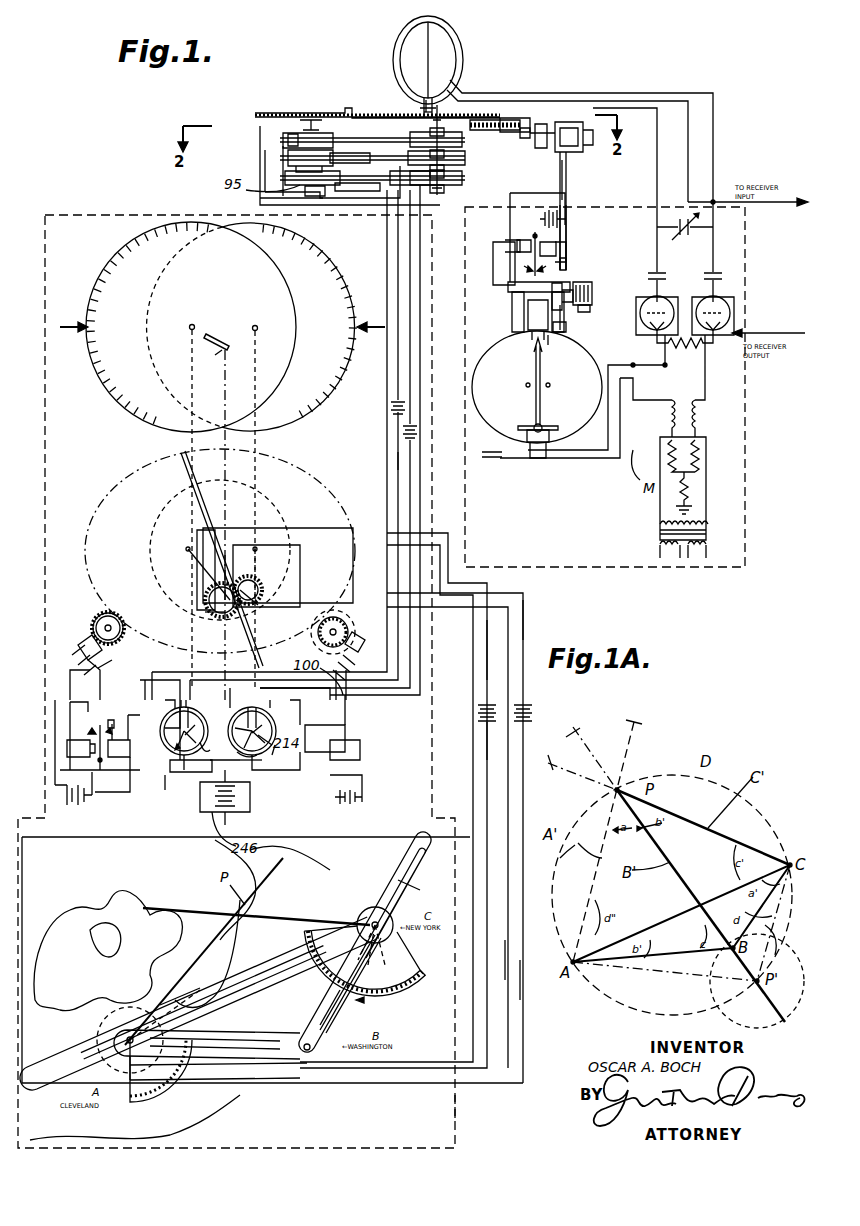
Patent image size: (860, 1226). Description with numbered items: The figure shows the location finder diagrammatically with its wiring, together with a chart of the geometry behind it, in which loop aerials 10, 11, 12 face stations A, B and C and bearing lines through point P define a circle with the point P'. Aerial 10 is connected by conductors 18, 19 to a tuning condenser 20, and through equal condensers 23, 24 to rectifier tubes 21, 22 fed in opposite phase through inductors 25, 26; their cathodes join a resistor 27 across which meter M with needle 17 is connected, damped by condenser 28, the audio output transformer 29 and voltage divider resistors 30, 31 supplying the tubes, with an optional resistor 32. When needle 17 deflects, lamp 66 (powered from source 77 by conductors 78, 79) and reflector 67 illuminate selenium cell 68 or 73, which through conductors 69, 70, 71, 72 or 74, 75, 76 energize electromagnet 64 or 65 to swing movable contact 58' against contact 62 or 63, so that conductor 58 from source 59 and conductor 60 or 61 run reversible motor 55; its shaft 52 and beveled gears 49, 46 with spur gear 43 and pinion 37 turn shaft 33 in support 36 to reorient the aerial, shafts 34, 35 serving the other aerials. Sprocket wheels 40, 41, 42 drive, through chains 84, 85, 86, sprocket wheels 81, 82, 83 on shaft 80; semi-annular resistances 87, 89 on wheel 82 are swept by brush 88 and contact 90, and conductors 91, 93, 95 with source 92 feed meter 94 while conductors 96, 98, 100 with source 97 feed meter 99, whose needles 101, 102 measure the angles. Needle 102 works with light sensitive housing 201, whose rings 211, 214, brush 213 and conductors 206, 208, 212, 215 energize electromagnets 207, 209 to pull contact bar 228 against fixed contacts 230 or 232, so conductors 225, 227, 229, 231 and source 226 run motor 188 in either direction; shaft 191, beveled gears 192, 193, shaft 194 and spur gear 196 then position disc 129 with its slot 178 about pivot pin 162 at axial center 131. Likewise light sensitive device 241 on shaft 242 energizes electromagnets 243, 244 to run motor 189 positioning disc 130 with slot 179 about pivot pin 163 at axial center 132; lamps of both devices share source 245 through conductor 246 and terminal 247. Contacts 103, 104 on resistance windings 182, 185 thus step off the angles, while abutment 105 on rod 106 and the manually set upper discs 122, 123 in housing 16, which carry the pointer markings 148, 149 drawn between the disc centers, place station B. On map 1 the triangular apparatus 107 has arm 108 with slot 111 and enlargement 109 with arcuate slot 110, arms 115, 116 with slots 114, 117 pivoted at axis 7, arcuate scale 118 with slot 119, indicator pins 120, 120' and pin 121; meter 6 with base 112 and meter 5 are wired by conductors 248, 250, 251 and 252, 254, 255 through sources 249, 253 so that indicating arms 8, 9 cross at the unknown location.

In FIG. 1, the map 1 is at (455, 1106).
In FIG. 1, the meter 5 is at (110, 1020).
In FIG. 1A, the meter 5 is at (752, 1025).
In FIG. 1, the meter 6 is at (362, 912).
In FIG. 1, the axis 7 is at (306, 1052).
In FIG. 1, the indicating arm 8 is at (188, 958).
In FIG. 1, the indicating arm 9 is at (180, 912).
In FIG. 1, the loop aerial 10 is at (405, 42).
In FIG. 1A, the loop aerial 10 is at (636, 722).
In FIG. 1, the loop aerial 11 is at (426, 34).
In FIG. 1A, the loop aerial 11 is at (572, 733).
In FIG. 1A, the loop aerial 12 is at (553, 762).
In FIG. 1, the housing 16 is at (70, 215).
In FIG. 1, the needle 17 is at (535, 398).
In FIG. 1, the conductor 18 is at (657, 150).
In FIG. 1, the conductor 19 is at (716, 126).
In FIG. 1, the condenser 20 is at (695, 232).
In FIG. 1, the rectifier tube 21 is at (664, 298).
In FIG. 1, the rectifier tube 22 is at (730, 300).
In FIG. 1, the condenser 23 is at (660, 270).
In FIG. 1, the condenser 24 is at (712, 272).
In FIG. 1, the radio frequency inductor 25 is at (668, 415).
In FIG. 1, the radio frequency inductor 26 is at (702, 415).
In FIG. 1, the resistor 27 is at (678, 342).
In FIG. 1, the condenser 28 is at (488, 460).
In FIG. 1, the audio output transformer 29 is at (660, 530).
In FIG. 1, the resistor 30 is at (668, 468).
In FIG. 1, the resistor 31 is at (700, 460).
In FIG. 1, the resistor 32 is at (690, 492).
In FIG. 1, the shaft 33 is at (424, 100).
In FIG. 1, the shaft 34 is at (455, 155).
In FIG. 1, the shaft 35 is at (458, 180).
In FIG. 1, the support 36 is at (262, 116).
In FIG. 1, the pinion 37 is at (428, 115).
In FIG. 1, the sprocket wheel 40 is at (460, 140).
In FIG. 1, the sprocket wheel 41 is at (458, 165).
In FIG. 1, the sprocket wheel 42 is at (445, 188).
In FIG. 1, the spur gear 43 is at (515, 125).
In FIG. 1, the beveled gear 46 is at (478, 122).
In FIG. 1, the beveled gear 49 is at (530, 128).
In FIG. 1, the shaft 52 is at (542, 124).
In FIG. 1, the motor 55 is at (572, 122).
In FIG. 1, the conductor 58 is at (583, 176).
In FIG. 1, the movable contact 58' is at (592, 253).
In FIG. 1, the source of current supply 59 is at (558, 212).
In FIG. 1, the conductor 60 is at (575, 205).
In FIG. 1, the conductor 61 is at (513, 193).
In FIG. 1, the contact 62 is at (546, 268).
In FIG. 1, the contact 63 is at (528, 268).
In FIG. 1, the electromagnet 64 is at (524, 240).
In FIG. 1, the electromagnet 65 is at (558, 252).
In FIG. 1, the lamp 66 is at (530, 335).
In FIG. 1, the reflector 67 is at (528, 425).
In FIG. 1, the selenium cell 68 is at (516, 333).
In FIG. 1, the conductor 69 is at (512, 318).
In FIG. 1, the conductor 70 is at (512, 306).
In FIG. 1, the conductor 71 is at (497, 242).
In FIG. 1, the conductor 72 is at (505, 246).
In FIG. 1, the selenium cell 73 is at (548, 345).
In FIG. 1, the conductor 74 is at (565, 295).
In FIG. 1, the conductor 75 is at (552, 250).
In FIG. 1, the conductor 76 is at (560, 322).
In FIG. 1, the source of electric energy 77 is at (590, 305).
In FIG. 1, the conductor 78 is at (567, 312).
In FIG. 1, the conductor 79 is at (590, 292).
In FIG. 1, the shaft 80 is at (305, 118).
In FIG. 1, the sprocket wheel 81 is at (292, 139).
In FIG. 1, the sprocket wheel 82 is at (285, 160).
In FIG. 1, the sprocket wheel 83 is at (300, 180).
In FIG. 1, the sprocket chain 84 is at (432, 132).
In FIG. 1, the sprocket chain 85 is at (395, 172).
In FIG. 1, the sprocket chain 86 is at (368, 188).
In FIG. 1, the semi-annular resistance 87 is at (300, 138).
In FIG. 1, the brush 88 is at (300, 152).
In FIG. 1, the semi-annular resistance 89 is at (340, 167).
In FIG. 1, the contact 90 is at (283, 196).
In FIG. 1, the conductor 91 is at (330, 192).
In FIG. 1, the source of electric current 92 is at (402, 438).
In FIG. 1, the conductor 93 is at (408, 475).
In FIG. 1, the meter 94 is at (245, 708).
In FIG. 1, the conductor 95 is at (420, 490).
In FIG. 1, the conductor 96 is at (395, 355).
In FIG. 1, the source of electric current 97 is at (388, 412).
In FIG. 1, the conductor 98 is at (396, 460).
In FIG. 1, the meter 99 is at (180, 708).
In FIG. 1, the conductor 100 is at (388, 252).
In FIG. 1, the needle 101 is at (270, 735).
In FIG. 1, the needle 102 is at (186, 760).
In FIG. 1, the contact 103 is at (218, 598).
In FIG. 1, the contact 104 is at (258, 585).
In FIG. 1, the abutment 105 is at (225, 555).
In FIG. 1, the rod 106 is at (183, 460).
In FIG. 1, the triangular apparatus 107 is at (360, 1000).
In FIG. 1, the arm 108 is at (55, 1063).
In FIG. 1, the enlargement 109 is at (400, 955).
In FIG. 1, the arcuate slot 110 is at (425, 978).
In FIG. 1, the longitudinally extending slot 111 is at (305, 970).
In FIG. 1, the base 112 is at (412, 890).
In FIG. 1, the slot 114 is at (405, 858).
In FIG. 1, the arm 115 is at (416, 845).
In FIG. 1, the arm 116 is at (262, 1072).
In FIG. 1, the slot 117 is at (240, 1062).
In FIG. 1, the arcuate scale 118 is at (128, 1100).
In FIG. 1, the arcuate slot 119 is at (148, 1100).
In FIG. 1, the pin 120 is at (207, 1045).
In FIG. 1, the pin 120' is at (347, 1008).
In FIG. 1, the pin 121 is at (185, 1010).
In FIG. 1, the upper disc 122 is at (135, 400).
In FIG. 1, the upper disc 123 is at (300, 395).
In FIG. 1, the disc 129 is at (92, 518).
In FIG. 1, the disc 130 is at (350, 560).
In FIG. 1, the axial center 131 is at (188, 327).
In FIG. 1, the axial center 132 is at (258, 328).
In FIG. 1, the pointer 148 is at (208, 335).
In FIG. 1, the pointer 149 is at (238, 340).
In FIG. 1, the pivot pin 162 is at (185, 548).
In FIG. 1, the pivot pin 163 is at (258, 548).
In FIG. 1, the straight slot 178 is at (203, 573).
In FIG. 1, the straight slot 179 is at (280, 556).
In FIG. 1, the resistance winding 182 is at (230, 615).
In FIG. 1, the resistance winding 185 is at (260, 598).
In FIG. 1, the electric motor 188 is at (80, 655).
In FIG. 1, the electric motor 189 is at (340, 648).
In FIG. 1, the shaft 191 is at (92, 640).
In FIG. 1, the beveled gear 192 is at (98, 618).
In FIG. 1, the beveled gear 193 is at (108, 616).
In FIG. 1, the shaft 194 is at (112, 626).
In FIG. 1, the spur gear 196 is at (113, 622).
In FIG. 1, the light sensitive housing 201 is at (175, 700).
In FIG. 1, the conductor 206 is at (88, 729).
In FIG. 1, the electromagnet 207 is at (66, 750).
In FIG. 1, the conductor 208 is at (118, 732).
In FIG. 1, the electromagnet 209 is at (122, 748).
In FIG. 1, the inner ring portion 211 is at (178, 775).
In FIG. 1, the conductor 212 is at (128, 800).
In FIG. 1, the brush 213 is at (195, 735).
In FIG. 1, the inner ring portion 214 is at (185, 735).
In FIG. 1, the conductor 215 is at (130, 780).
In FIG. 1, the common conductor 225 is at (60, 772).
In FIG. 1, the source of electric current 226 is at (62, 795).
In FIG. 1, the conductor 227 is at (96, 800).
In FIG. 1, the movable contact bar 228 is at (96, 740).
In FIG. 1, the conductor 229 is at (90, 672).
In FIG. 1, the fixed contact 230 is at (82, 714).
In FIG. 1, the conductor 231 is at (100, 670).
In FIG. 1, the fixed contact 232 is at (112, 722).
In FIG. 1, the light sensitive device 241 is at (278, 750).
In FIG. 1, the shaft 242 is at (268, 750).
In FIG. 1, the electromagnet 243 is at (345, 740).
In FIG. 1, the electromagnet 244 is at (350, 745).
In FIG. 1, the source of electric current 245 is at (240, 812).
In FIG. 1, the conductor 246 is at (252, 808).
In FIG. 1, the terminal 247 is at (240, 794).
In FIG. 1, the conductor 248 is at (525, 618).
In FIG. 1, the source of electric energy 249 is at (526, 700).
In FIG. 1, the conductor 250 is at (520, 973).
In FIG. 1, the conductor 251 is at (505, 958).
In FIG. 1, the conductor 252 is at (487, 660).
In FIG. 1, the source of electric energy 253 is at (486, 705).
In FIG. 1, the conductor 254 is at (486, 730).
In FIG. 1, the conductor 255 is at (487, 635).